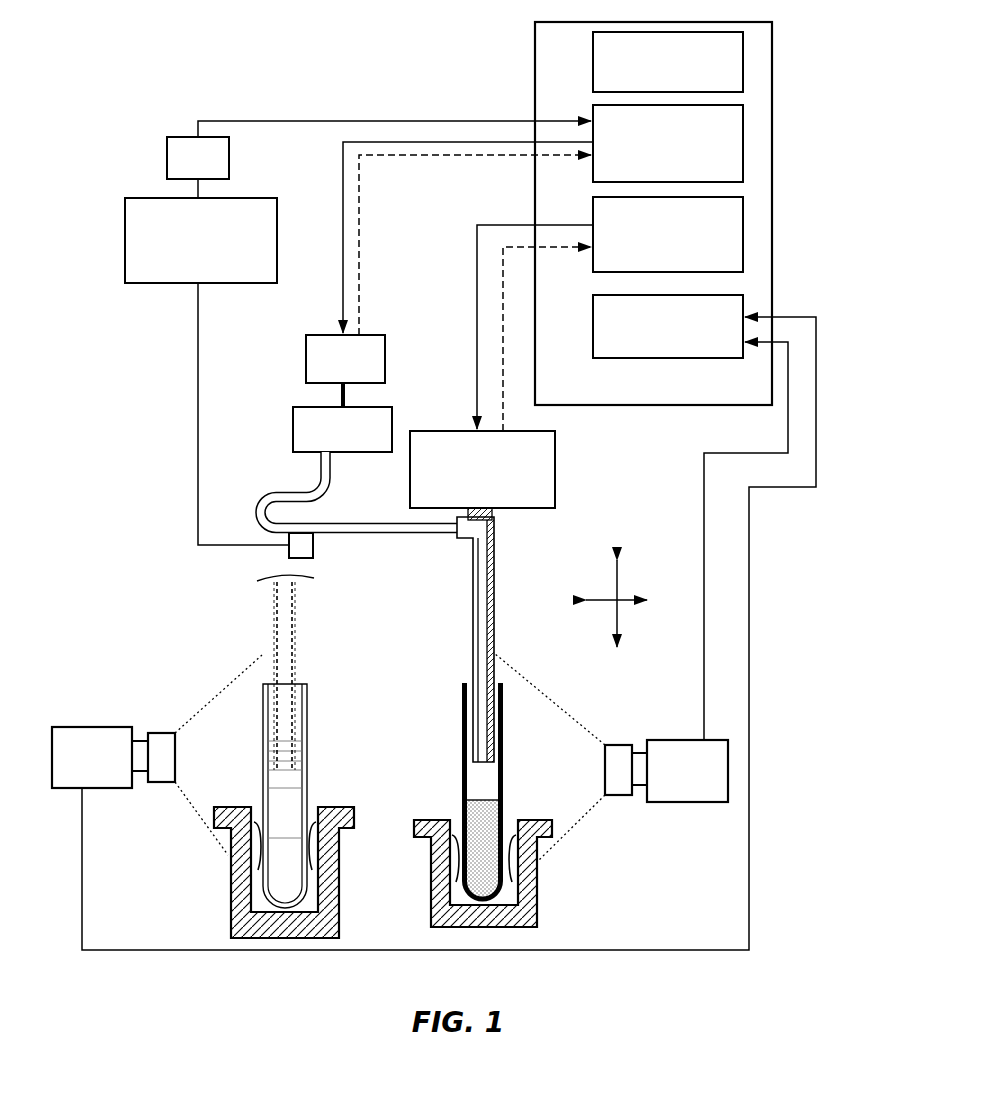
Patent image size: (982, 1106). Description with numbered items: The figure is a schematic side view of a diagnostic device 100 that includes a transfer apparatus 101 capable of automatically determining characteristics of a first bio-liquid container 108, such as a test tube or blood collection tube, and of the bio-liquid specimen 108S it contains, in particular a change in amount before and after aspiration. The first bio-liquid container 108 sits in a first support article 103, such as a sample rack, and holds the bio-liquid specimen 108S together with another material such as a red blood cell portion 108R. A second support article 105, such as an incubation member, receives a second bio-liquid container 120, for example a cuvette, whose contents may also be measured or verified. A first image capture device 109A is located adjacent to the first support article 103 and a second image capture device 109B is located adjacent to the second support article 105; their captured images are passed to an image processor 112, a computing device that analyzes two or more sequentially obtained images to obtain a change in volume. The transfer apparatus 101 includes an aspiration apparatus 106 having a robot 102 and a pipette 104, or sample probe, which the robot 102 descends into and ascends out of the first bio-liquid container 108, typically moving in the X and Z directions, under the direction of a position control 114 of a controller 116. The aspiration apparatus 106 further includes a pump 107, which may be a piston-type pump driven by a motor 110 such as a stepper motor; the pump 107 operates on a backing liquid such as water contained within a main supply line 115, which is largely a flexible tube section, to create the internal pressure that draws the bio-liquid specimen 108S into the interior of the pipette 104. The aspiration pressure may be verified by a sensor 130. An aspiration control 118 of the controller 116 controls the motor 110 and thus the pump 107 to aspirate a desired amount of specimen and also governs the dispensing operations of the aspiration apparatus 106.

The diagnostic device 100 is at (378, 99).
The transfer apparatus 101 is at (208, 604).
The robot 102 is at (558, 467).
The first support article 103 is at (537, 897).
The pipette 104 is at (471, 637).
The second support article 105 is at (339, 872).
The aspiration apparatus 106 is at (178, 481).
The pump 107 is at (293, 425).
The first bio-liquid container 108 is at (448, 792).
The red blood cell portion 108R is at (483, 815).
The bio-liquid specimen 108S is at (485, 777).
The first image capture device 109A is at (700, 803).
The second image capture device 109B is at (72, 727).
The motor 110 is at (306, 361).
The image processor 112 is at (743, 302).
The position control 114 is at (743, 232).
The main supply line 115 is at (427, 536).
The controller 116 is at (776, 94).
The aspiration control 118 is at (743, 142).
The second bio-liquid container 120 is at (312, 725).
The sensor 130 is at (312, 554).